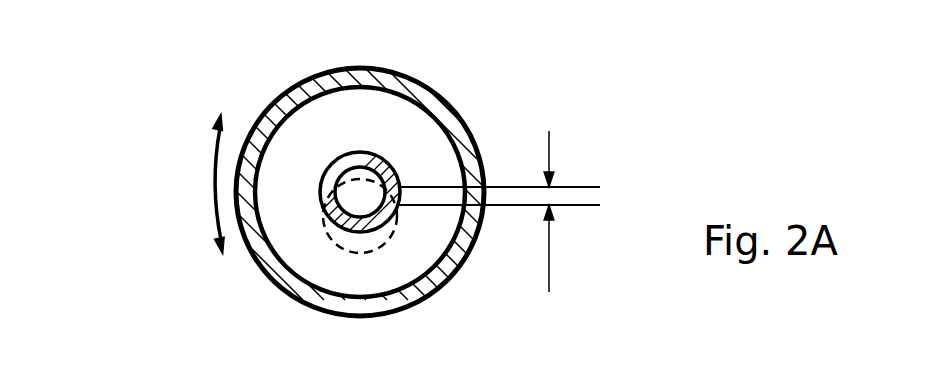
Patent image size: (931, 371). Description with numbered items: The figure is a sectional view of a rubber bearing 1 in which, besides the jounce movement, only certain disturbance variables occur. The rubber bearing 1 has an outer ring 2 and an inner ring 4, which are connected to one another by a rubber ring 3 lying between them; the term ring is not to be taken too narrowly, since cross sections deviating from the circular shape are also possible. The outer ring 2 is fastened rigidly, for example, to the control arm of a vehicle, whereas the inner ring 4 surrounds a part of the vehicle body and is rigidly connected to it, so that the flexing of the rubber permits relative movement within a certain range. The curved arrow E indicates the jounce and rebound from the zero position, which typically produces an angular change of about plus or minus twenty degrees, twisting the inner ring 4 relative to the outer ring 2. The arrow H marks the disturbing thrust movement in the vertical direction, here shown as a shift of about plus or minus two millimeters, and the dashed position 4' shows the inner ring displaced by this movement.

The rubber bearing 1 is at (334, 70).
The outer ring 2 is at (392, 118).
The rubber ring 3 is at (420, 163).
The inner ring 4 is at (349, 156).
The displaced core position 4' is at (425, 256).
The arrow indicating jounce and rebound E is at (176, 180).
The disturbing movement arrow (vertical thrust) H is at (565, 148).